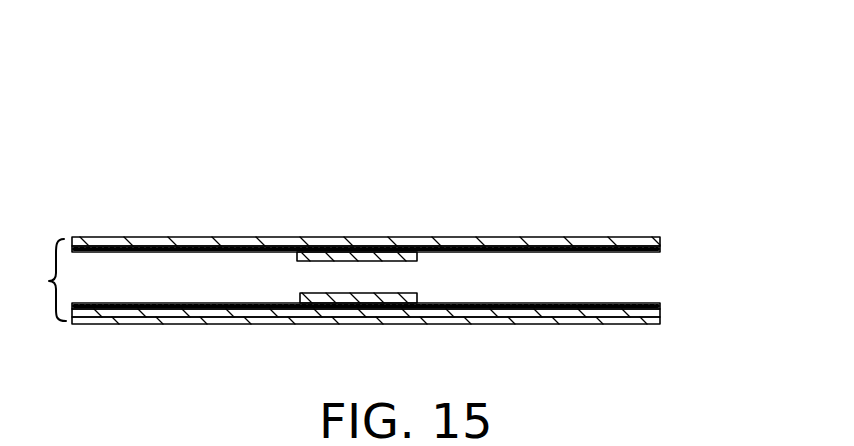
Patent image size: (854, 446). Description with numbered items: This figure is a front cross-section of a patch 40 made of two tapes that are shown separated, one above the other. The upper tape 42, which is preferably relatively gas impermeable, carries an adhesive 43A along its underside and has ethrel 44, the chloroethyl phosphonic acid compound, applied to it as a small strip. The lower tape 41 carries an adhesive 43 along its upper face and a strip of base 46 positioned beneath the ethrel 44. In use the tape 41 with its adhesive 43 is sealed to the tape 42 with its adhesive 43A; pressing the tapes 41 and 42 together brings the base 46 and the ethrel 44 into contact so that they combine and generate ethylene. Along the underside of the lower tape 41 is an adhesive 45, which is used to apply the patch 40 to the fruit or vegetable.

The patch 40 is at (647, 157).
The tape 41 is at (652, 308).
The tape 42 is at (422, 230).
The adhesive 43 is at (652, 300).
The adhesive 43A is at (652, 243).
The ethrel 44 is at (287, 248).
The adhesive 45 is at (504, 316).
The base 46 is at (290, 294).